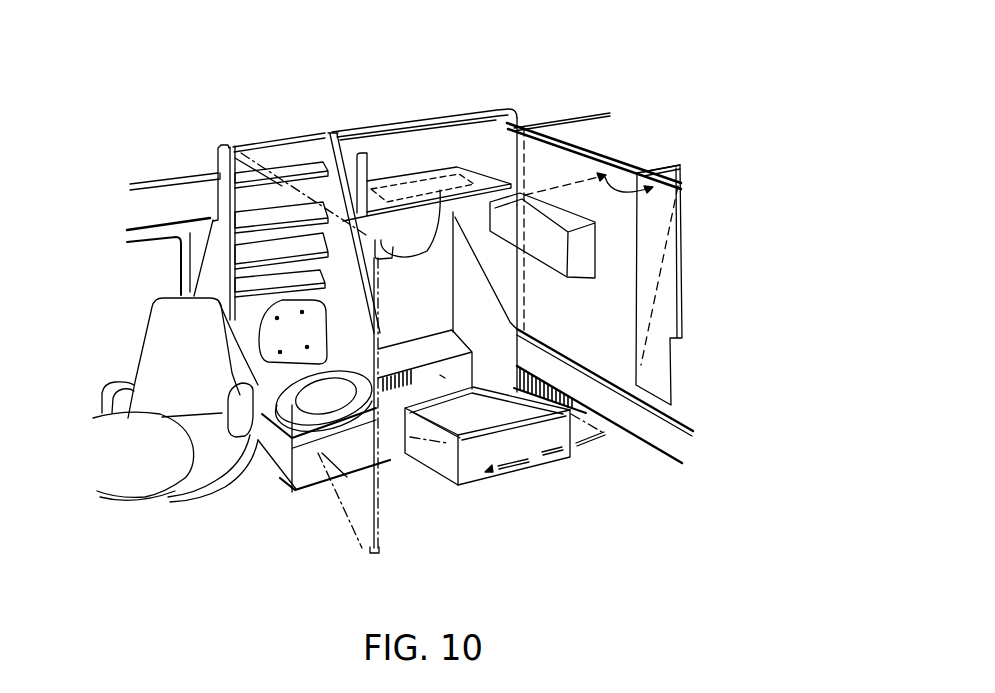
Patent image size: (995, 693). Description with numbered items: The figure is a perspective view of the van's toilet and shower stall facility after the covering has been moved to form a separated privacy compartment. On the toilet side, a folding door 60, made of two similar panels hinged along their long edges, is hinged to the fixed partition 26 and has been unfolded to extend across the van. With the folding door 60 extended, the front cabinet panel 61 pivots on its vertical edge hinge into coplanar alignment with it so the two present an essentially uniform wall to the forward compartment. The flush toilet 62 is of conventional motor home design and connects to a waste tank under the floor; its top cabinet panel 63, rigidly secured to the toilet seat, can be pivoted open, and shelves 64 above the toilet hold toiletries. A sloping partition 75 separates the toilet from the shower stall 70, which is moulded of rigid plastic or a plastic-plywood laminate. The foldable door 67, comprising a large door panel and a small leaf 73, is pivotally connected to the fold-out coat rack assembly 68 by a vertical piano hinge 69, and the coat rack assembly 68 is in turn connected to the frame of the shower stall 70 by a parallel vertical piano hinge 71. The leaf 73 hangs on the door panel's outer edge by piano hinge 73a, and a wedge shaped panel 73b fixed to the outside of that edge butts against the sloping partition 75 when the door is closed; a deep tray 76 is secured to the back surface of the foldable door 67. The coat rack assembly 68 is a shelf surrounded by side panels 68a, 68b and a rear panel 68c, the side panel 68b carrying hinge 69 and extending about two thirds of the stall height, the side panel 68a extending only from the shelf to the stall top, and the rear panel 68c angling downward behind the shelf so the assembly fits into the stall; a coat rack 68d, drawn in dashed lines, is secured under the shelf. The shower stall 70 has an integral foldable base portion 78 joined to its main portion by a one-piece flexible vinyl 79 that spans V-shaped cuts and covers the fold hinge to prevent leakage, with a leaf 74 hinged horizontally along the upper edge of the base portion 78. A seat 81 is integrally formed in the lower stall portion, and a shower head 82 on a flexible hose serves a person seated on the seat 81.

The partition 26 is at (223, 160).
The folding door 60 is at (382, 473).
The front cabinet panel 61 is at (334, 523).
The flush toilet 62 is at (306, 497).
The top cabinet panel 63 is at (262, 476).
The shelves 64 is at (263, 203).
The foldable door 67 is at (610, 160).
The fold-out coat rack assembly 68 is at (443, 127).
The side panel 68a is at (359, 175).
The side panel 68b is at (487, 132).
The rear panel 68c is at (432, 137).
The coat rack 68d is at (422, 185).
The piano hinge 69 is at (507, 158).
The shower stall 70 is at (520, 484).
The piano hinge 71 is at (563, 140).
The leaf 73 is at (686, 290).
The piano hinge 73a is at (638, 203).
The wedge shaped panel 73b is at (681, 168).
The leaf 74 is at (597, 433).
The sloping partition 75 is at (349, 168).
The deep tray 76 is at (617, 255).
The foldable base portion 78 is at (550, 460).
The flexible piece of vinyl 79 is at (412, 442).
The seat 81 is at (440, 375).
The shower head 82 is at (440, 190).